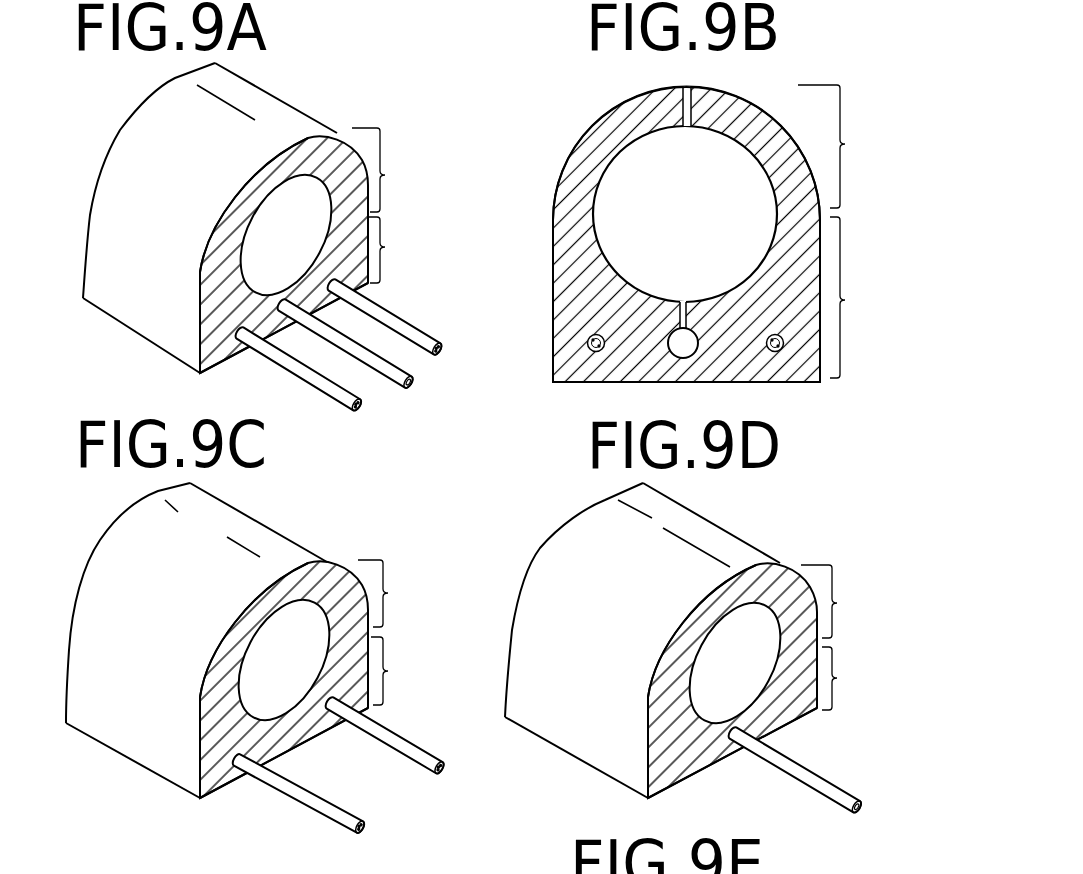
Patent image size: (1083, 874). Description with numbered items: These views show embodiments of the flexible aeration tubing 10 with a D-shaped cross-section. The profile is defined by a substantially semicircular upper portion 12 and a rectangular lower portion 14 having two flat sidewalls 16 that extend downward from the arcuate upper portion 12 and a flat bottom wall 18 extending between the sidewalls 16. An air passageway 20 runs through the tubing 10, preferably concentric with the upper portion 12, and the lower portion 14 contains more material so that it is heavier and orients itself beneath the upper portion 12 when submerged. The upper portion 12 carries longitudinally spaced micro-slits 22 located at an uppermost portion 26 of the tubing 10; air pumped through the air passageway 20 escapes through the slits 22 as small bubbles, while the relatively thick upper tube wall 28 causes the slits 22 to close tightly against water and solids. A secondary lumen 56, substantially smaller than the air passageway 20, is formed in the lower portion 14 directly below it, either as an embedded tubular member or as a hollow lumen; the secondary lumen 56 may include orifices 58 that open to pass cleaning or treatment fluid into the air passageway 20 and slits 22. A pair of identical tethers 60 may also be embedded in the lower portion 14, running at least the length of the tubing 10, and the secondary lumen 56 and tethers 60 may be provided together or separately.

In FIG. 9A, the flexible tubing 10 is at (117, 342).
In FIG. 9B, the flexible tubing 10 is at (573, 107).
In FIG. 9C, the flexible tubing 10 is at (120, 765).
In FIG. 9D, the flexible tubing 10 is at (550, 753).
In FIG. 9A, the upper portion 12 is at (388, 170).
In FIG. 9B, the upper portion 12 is at (837, 146).
In FIG. 9C, the upper portion 12 is at (392, 593).
In FIG. 9D, the upper portion 12 is at (837, 601).
In FIG. 9A, the lower portion 14 is at (395, 250).
In FIG. 9B, the lower portion 14 is at (855, 297).
In FIG. 9C, the lower portion 14 is at (399, 671).
In FIG. 9D, the lower portion 14 is at (846, 678).
In FIG. 9A, the sidewalls 16 is at (198, 368).
In FIG. 9B, the sidewalls 16 is at (552, 325).
In FIG. 9C, the sidewalls 16 is at (197, 780).
In FIG. 9D, the sidewalls 16 is at (642, 763).
In FIG. 9A, the bottom wall 18 is at (217, 365).
In FIG. 9B, the bottom wall 18 is at (797, 383).
In FIG. 9C, the bottom wall 18 is at (223, 790).
In FIG. 9D, the bottom wall 18 is at (677, 787).
In FIG. 9A, the air passageway 20 is at (270, 248).
In FIG. 9B, the air passageway 20 is at (673, 184).
In FIG. 9C, the air passageway 20 is at (275, 662).
In FIG. 9D, the air passageway 20 is at (716, 681).
In FIG. 9A, the slits 22 is at (224, 102).
In FIG. 9B, the slits 22 is at (693, 100).
In FIG. 9C, the slits 22 is at (175, 512).
In FIG. 9D, the slits 22 is at (633, 510).
In FIG. 9A, the uppermost portion 26 is at (288, 138).
In FIG. 9B, the uppermost portion 26 is at (680, 87).
In FIG. 9C, the uppermost portion 26 is at (298, 563).
In FIG. 9D, the uppermost portion 26 is at (748, 565).
In FIG. 9A, the upper tube wall 28 is at (248, 192).
In FIG. 9B, the upper tube wall 28 is at (763, 100).
In FIG. 9C, the upper tube wall 28 is at (235, 633).
In FIG. 9D, the upper tube wall 28 is at (682, 643).
In FIG. 9A, the secondary lumen 56 is at (413, 387).
In FIG. 9B, the secondary lumen 56 is at (693, 358).
In FIG. 9D, the secondary lumen 56 is at (843, 803).
In FIG. 9B, the orifices 58 is at (688, 312).
In FIG. 9A, the tethers 60 is at (436, 330).
In FIG. 9B, the tethers 60 is at (595, 352).
In FIG. 9C, the tethers 60 is at (364, 817).